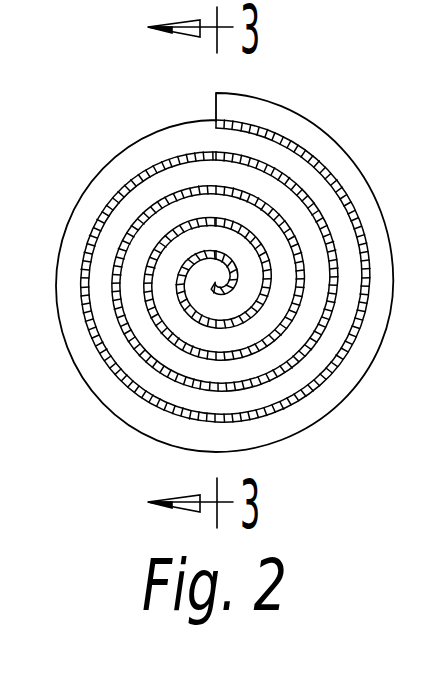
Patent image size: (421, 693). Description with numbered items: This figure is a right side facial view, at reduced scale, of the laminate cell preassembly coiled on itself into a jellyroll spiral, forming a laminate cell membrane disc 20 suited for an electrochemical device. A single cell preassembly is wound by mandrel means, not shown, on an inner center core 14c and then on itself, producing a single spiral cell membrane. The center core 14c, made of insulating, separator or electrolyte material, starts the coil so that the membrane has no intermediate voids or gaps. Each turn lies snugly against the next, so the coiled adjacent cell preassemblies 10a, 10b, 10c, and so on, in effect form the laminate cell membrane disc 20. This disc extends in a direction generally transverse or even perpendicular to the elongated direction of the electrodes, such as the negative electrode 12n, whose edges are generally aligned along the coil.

The coiled adjacent cell preassembly 10a is at (167, 240).
The coiled adjacent cell preassembly 10b is at (191, 258).
The coiled adjacent cell preassembly 10c is at (203, 190).
The negative electrode 12n is at (348, 194).
The inner center core 14c is at (216, 254).
The laminate cell membrane disc 20 is at (331, 117).